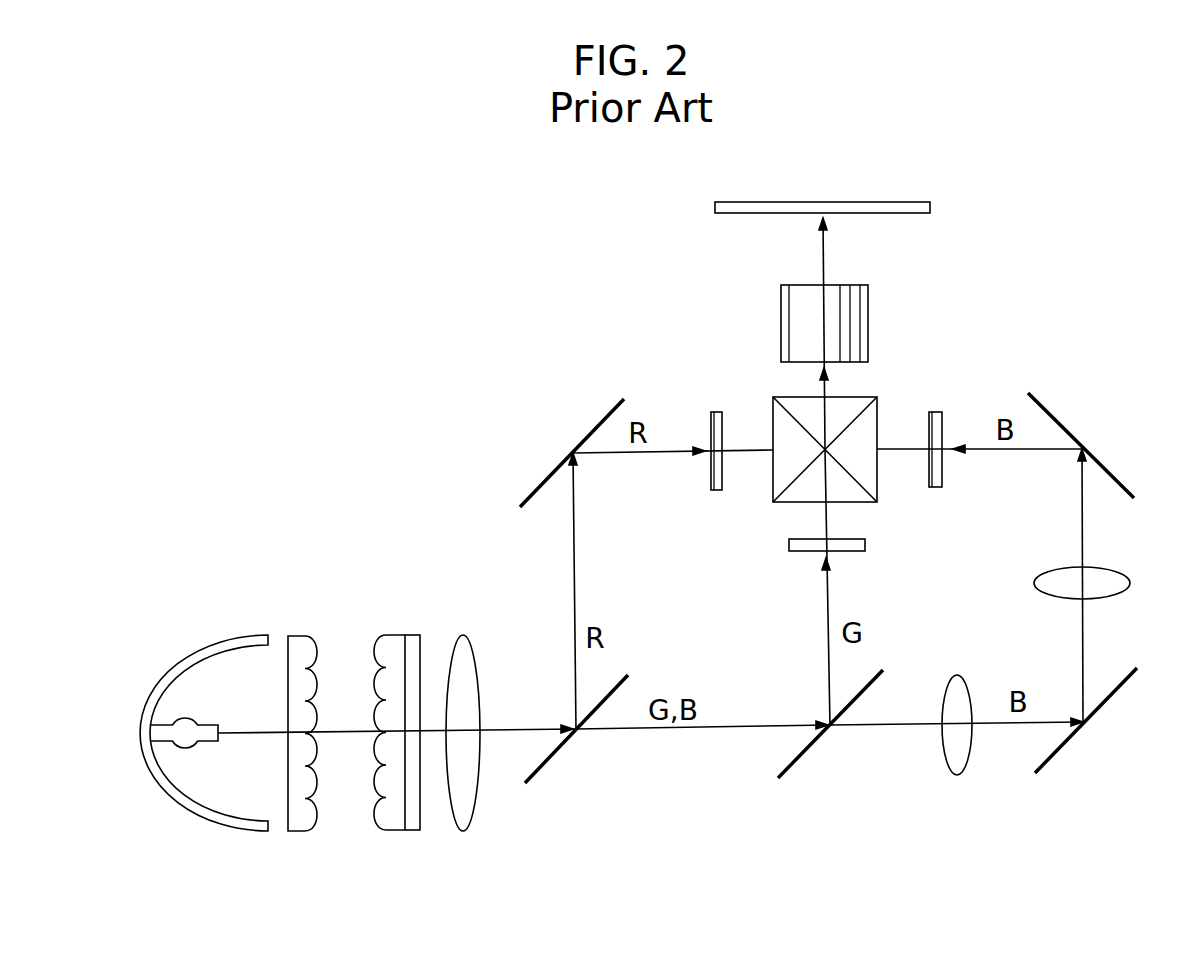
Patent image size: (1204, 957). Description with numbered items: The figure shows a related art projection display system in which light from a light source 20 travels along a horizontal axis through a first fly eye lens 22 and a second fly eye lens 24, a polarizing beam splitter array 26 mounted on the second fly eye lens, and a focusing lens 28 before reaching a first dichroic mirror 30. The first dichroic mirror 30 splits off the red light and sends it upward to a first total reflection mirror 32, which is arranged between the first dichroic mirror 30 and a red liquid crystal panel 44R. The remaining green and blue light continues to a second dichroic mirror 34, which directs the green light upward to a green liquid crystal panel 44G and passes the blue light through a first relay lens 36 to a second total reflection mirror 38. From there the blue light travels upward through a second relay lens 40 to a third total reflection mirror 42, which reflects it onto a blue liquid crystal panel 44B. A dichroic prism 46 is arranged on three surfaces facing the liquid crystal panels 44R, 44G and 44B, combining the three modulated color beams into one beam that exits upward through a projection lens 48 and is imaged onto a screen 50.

The light source 20 is at (197, 817).
The first fly eye lens 22 is at (300, 831).
The second fly eye lens 24 is at (397, 830).
The polarizing beam splitter array 26 is at (412, 635).
The focusing lens 28 is at (463, 831).
The first dichroic mirror 30 is at (555, 755).
The first total reflection mirror 32 is at (555, 468).
The second dichroic mirror 34 is at (810, 750).
The first relay lens 36 is at (957, 772).
The second total reflection mirror 38 is at (1103, 710).
The second relay lens 40 is at (1130, 583).
The third total reflection mirror 42 is at (1095, 460).
The red liquid crystal panel 44R is at (715, 412).
The green liquid crystal panel 44G is at (865, 545).
The blue liquid crystal panel 44B is at (935, 412).
The dichroic prism 46 is at (783, 400).
The projection lens 48 is at (868, 323).
The screen 50 is at (930, 207).